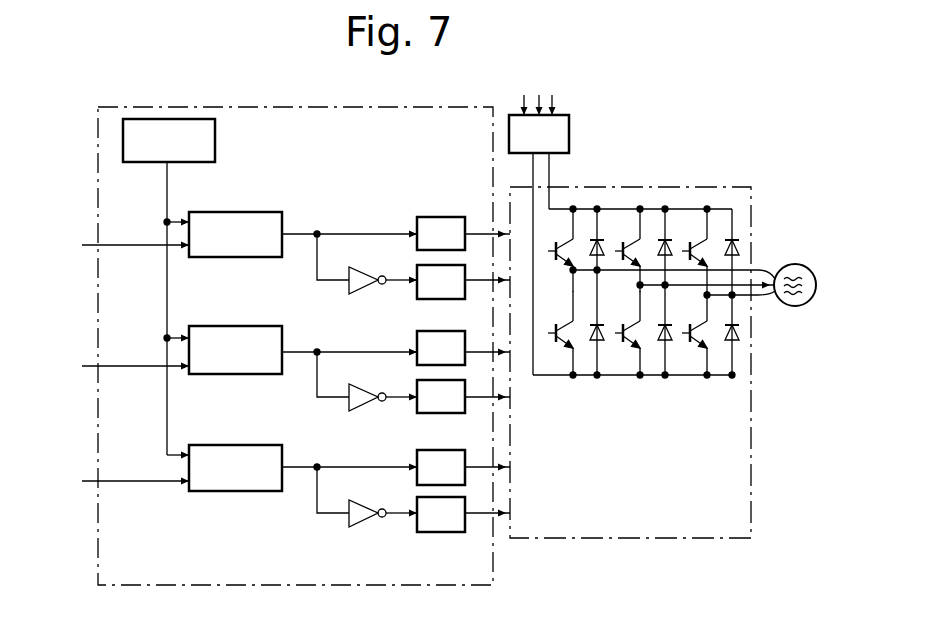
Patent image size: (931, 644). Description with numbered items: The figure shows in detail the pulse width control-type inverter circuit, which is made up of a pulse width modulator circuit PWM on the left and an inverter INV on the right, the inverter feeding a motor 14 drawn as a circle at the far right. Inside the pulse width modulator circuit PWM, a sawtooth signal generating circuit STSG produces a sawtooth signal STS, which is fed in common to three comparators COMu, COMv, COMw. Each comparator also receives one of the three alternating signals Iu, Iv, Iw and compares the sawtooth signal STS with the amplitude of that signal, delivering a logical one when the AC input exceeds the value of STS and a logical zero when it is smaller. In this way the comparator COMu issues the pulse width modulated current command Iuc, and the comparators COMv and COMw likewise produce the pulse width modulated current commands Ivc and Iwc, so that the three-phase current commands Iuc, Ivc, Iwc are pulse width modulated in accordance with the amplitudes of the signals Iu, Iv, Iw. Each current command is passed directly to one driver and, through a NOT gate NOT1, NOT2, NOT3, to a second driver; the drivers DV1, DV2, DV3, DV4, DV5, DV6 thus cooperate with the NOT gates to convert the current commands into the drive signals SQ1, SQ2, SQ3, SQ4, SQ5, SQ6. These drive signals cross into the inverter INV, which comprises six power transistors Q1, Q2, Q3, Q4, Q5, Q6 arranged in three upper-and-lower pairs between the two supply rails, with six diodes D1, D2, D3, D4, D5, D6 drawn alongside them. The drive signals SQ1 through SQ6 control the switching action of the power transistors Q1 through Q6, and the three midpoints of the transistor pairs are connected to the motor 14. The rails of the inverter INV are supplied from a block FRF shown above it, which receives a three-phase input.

The three-phase induction motor 14 is at (800, 264).
The pulse width modulator circuit PWM is at (295, 585).
The sawtooth signal generating circuit STSG is at (215, 140).
The sawtooth signal STS is at (187, 310).
The comparator COMu is at (235, 257).
The comparator COMv is at (238, 374).
The comparator COMw is at (226, 491).
The alternating signal Iu is at (121, 245).
The alternating signal Iv is at (121, 366).
The alternating signal Iw is at (119, 481).
The pulse width modulated current command Iuc is at (349, 245).
The pulse width modulated current command Ivc is at (349, 363).
The pulse width modulated current command Iwc is at (349, 478).
The NOT gate NOT1 is at (363, 270).
The NOT gate NOT2 is at (363, 387).
The NOT gate NOT3 is at (363, 503).
The driver DV1 is at (441, 233).
The driver DV2 is at (441, 282).
The driver DV3 is at (441, 348).
The driver DV4 is at (441, 396).
The driver DV5 is at (441, 467).
The driver DV6 is at (441, 514).
The drive signal SQ1 is at (487, 226).
The drive signal SQ2 is at (487, 272).
The drive signal SQ3 is at (487, 344).
The drive signal SQ4 is at (487, 389).
The drive signal SQ5 is at (487, 459).
The drive signal SQ6 is at (487, 505).
The full-wave rectifier FRF is at (569, 131).
The inverter INV is at (676, 187).
The power transistor Q1 is at (559, 239).
The power transistor Q2 is at (558, 322).
The power transistor Q3 is at (626, 247).
The power transistor Q4 is at (625, 330).
The power transistor Q5 is at (692, 252).
The power transistor Q6 is at (691, 333).
The diode D1 is at (608, 242).
The diode D2 is at (608, 322).
The diode D3 is at (676, 247).
The diode D4 is at (676, 330).
The diode D5 is at (744, 252).
The diode D6 is at (743, 335).